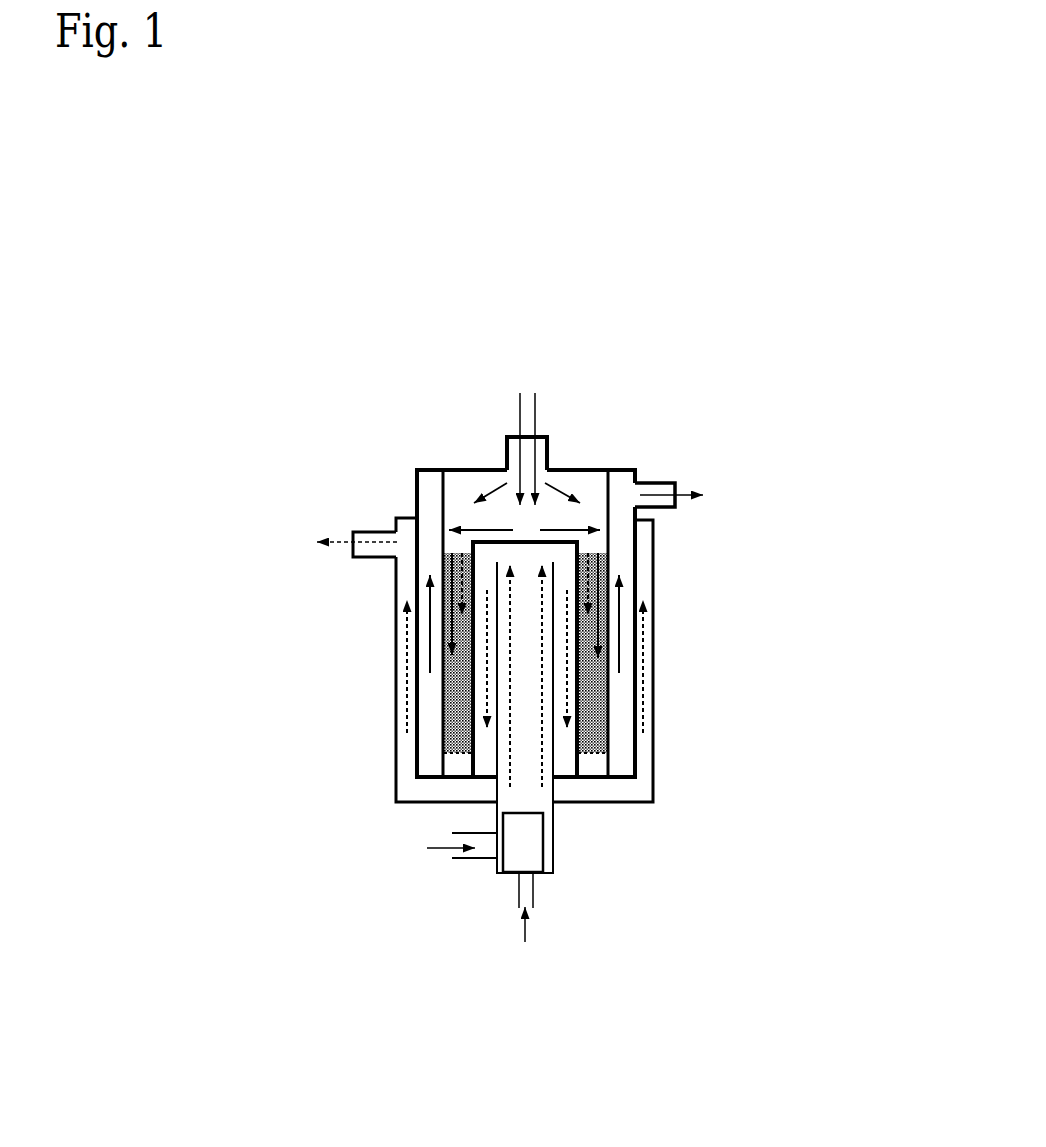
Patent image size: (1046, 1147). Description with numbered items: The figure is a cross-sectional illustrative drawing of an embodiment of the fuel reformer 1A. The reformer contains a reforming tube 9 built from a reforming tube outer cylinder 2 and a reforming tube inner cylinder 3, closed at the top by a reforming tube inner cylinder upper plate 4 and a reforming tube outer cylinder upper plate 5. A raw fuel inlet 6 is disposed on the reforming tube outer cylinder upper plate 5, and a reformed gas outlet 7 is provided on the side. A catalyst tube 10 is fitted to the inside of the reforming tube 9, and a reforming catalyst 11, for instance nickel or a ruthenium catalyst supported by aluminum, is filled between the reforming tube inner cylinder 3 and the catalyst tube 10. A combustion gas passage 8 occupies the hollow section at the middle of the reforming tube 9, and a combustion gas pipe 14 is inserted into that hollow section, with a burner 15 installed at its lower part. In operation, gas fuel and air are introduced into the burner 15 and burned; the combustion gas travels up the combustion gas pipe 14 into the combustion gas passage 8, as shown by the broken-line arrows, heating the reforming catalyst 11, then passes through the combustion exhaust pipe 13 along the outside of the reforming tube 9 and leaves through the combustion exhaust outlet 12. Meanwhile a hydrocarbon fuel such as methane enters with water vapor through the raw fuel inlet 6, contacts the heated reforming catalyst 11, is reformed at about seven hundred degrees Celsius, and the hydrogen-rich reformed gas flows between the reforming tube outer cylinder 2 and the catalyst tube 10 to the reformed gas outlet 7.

The fuel reformer 1A is at (679, 384).
The reforming tube outer cylinder 2 is at (635, 707).
The reforming tube inner cylinder 3 is at (600, 717).
The reforming tube inner cylinder upper plate 4 is at (537, 542).
The reforming tube outer cylinder upper plate 5 is at (468, 470).
The raw fuel inlet 6 is at (507, 448).
The reformed gas outlet 7 is at (657, 482).
The combustion gas passage 8 is at (482, 635).
The reforming tube 9 is at (635, 550).
The catalyst tube 10 is at (608, 693).
The reforming catalyst 11 is at (597, 745).
The combustion exhaust outlet 12 is at (372, 530).
The combustion exhaust pipe 13 is at (393, 710).
The combustion gas pipe 14 is at (495, 761).
The burner 15 is at (533, 842).